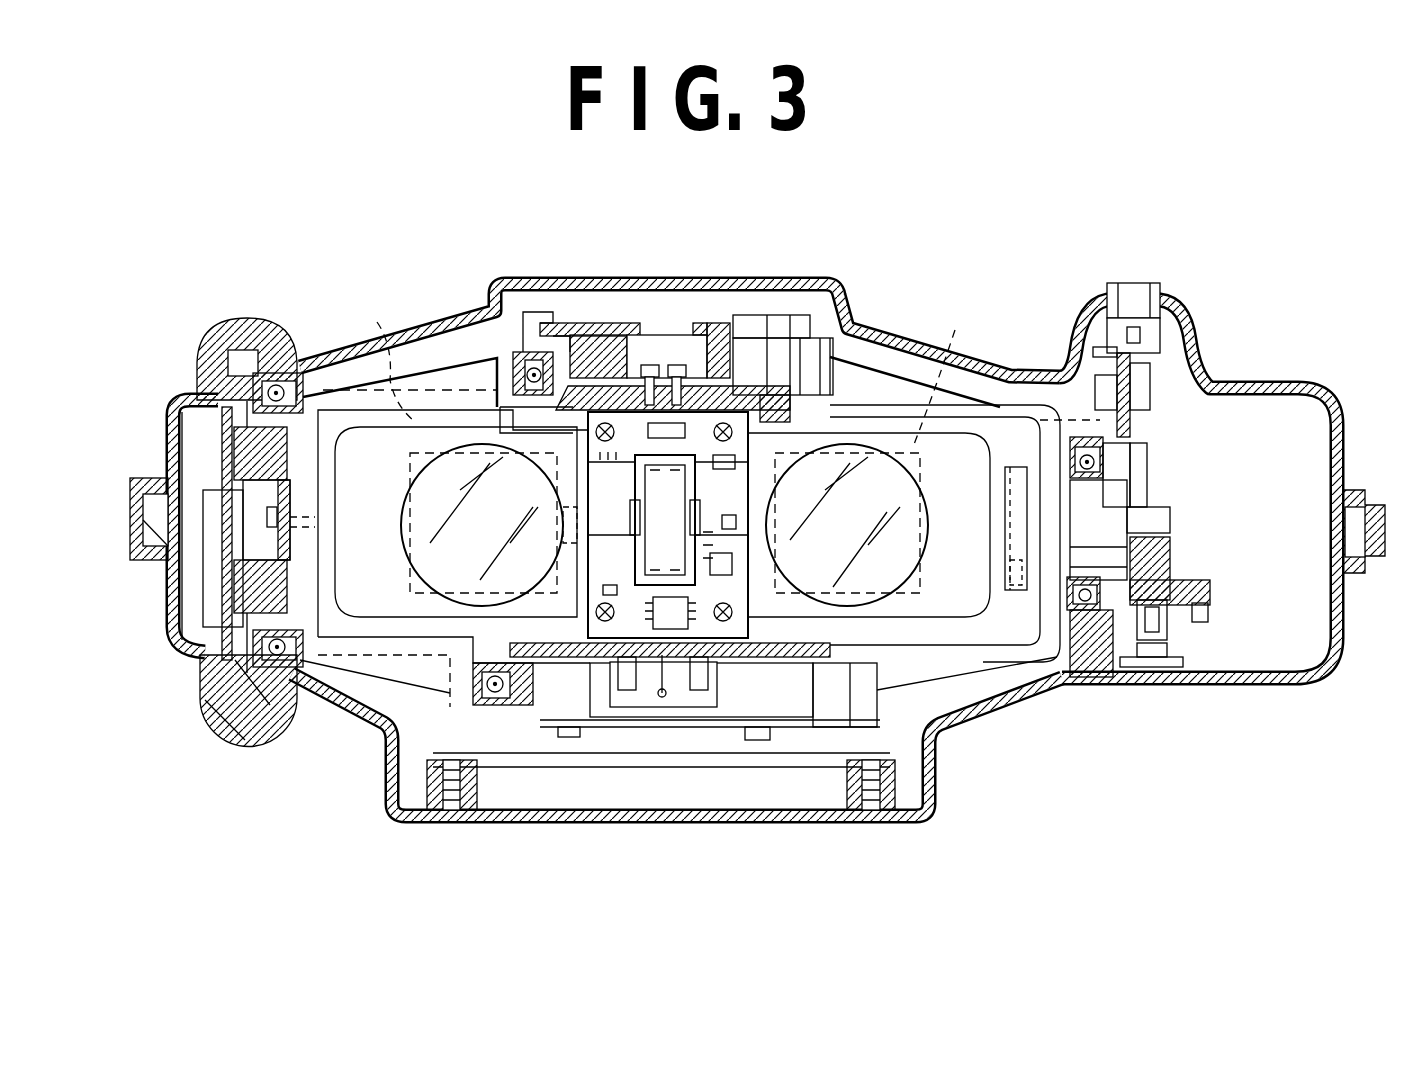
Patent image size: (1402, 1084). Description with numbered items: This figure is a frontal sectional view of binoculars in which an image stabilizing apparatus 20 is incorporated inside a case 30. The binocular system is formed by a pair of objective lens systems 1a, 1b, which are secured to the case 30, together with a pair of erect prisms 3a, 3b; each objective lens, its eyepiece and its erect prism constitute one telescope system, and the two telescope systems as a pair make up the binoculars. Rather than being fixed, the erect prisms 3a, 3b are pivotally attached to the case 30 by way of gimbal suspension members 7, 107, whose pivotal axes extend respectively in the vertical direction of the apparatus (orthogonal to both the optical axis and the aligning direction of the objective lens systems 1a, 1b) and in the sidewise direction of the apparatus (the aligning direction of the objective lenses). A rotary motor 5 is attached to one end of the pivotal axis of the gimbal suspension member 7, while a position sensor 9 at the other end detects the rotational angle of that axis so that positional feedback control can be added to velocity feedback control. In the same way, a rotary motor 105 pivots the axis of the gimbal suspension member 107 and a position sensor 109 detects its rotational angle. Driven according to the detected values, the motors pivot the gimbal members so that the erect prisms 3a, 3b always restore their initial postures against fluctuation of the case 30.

The image stabilizing apparatus 20 is at (598, 308).
The case 30 is at (1271, 381).
The rotary motor 105 is at (665, 328).
The gimbal suspension member 107 is at (985, 378).
The gimbal suspension member 7 is at (887, 405).
The erect prism 3a is at (383, 330).
The erect prism 3b is at (1006, 375).
The objective lens system 1a is at (403, 547).
The objective lens system 1b is at (918, 545).
The rotary motor 5 is at (210, 557).
The position sensor 9 is at (1170, 630).
The position sensor 109 is at (620, 700).